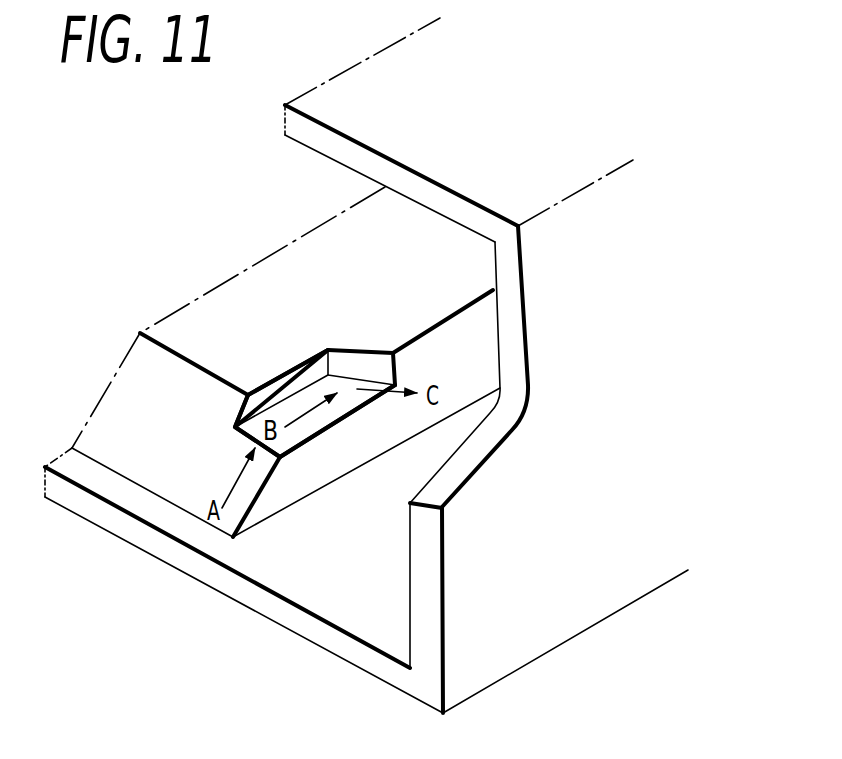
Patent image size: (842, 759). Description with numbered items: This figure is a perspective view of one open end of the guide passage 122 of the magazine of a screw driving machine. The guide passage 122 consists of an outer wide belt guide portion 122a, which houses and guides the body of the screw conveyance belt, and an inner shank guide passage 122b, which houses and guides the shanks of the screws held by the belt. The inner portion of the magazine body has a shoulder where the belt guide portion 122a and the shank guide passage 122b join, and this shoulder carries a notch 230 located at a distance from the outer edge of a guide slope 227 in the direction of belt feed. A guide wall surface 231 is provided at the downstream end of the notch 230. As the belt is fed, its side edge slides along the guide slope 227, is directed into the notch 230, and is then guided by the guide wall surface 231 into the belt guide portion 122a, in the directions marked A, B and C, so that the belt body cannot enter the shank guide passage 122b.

The guide passage 122 is at (475, 370).
The belt guide portion 122a is at (363, 555).
The shank guide passage 122b is at (233, 307).
The guide slope 227 is at (158, 452).
The notch 230 is at (295, 403).
The guide wall surface 231 is at (372, 372).